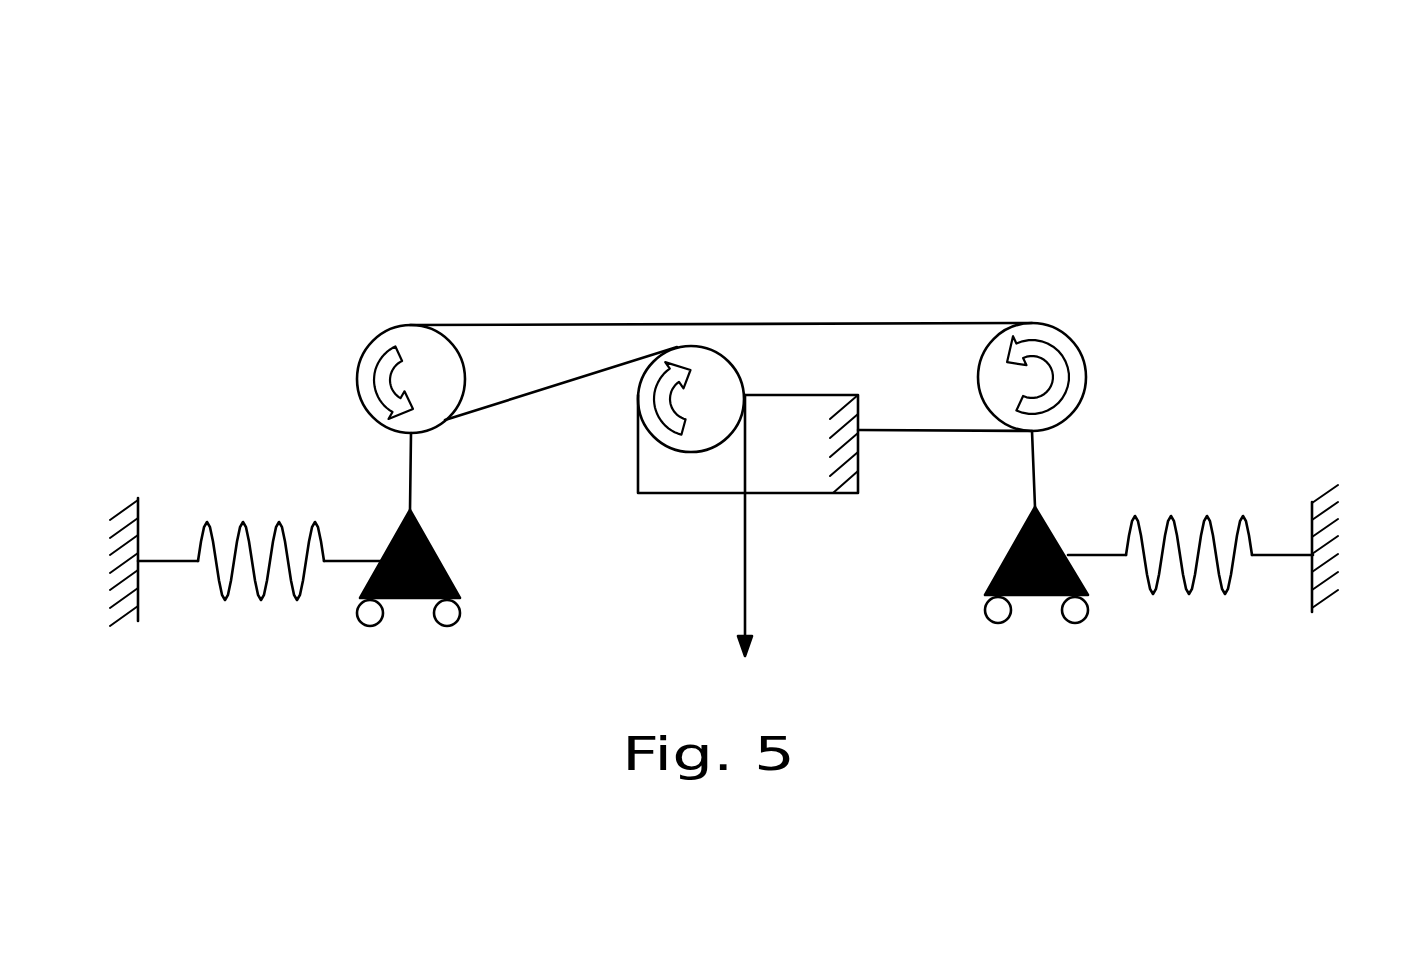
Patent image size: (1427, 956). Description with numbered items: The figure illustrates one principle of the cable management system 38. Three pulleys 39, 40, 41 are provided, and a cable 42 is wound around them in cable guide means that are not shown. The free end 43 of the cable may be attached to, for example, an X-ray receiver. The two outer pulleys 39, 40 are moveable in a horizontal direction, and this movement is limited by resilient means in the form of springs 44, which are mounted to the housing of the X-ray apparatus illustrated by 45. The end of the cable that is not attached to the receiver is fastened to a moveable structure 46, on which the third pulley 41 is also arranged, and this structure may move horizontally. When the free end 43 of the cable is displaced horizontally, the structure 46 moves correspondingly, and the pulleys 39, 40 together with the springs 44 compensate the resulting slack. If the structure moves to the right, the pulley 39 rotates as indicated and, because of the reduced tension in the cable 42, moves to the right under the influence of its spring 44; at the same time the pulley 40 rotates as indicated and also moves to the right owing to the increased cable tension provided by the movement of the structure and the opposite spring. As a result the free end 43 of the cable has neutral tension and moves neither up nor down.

The cable management system 38 is at (715, 192).
The pulley 39 is at (1097, 337).
The pulley 40 is at (390, 322).
The pulley 41 is at (738, 353).
The cable 42 is at (972, 308).
The free end of the cable 43 is at (767, 628).
The spring 44 is at (243, 493).
The housing of the X-ray apparatus 45 is at (113, 493).
The moveable structure 46 is at (793, 430).